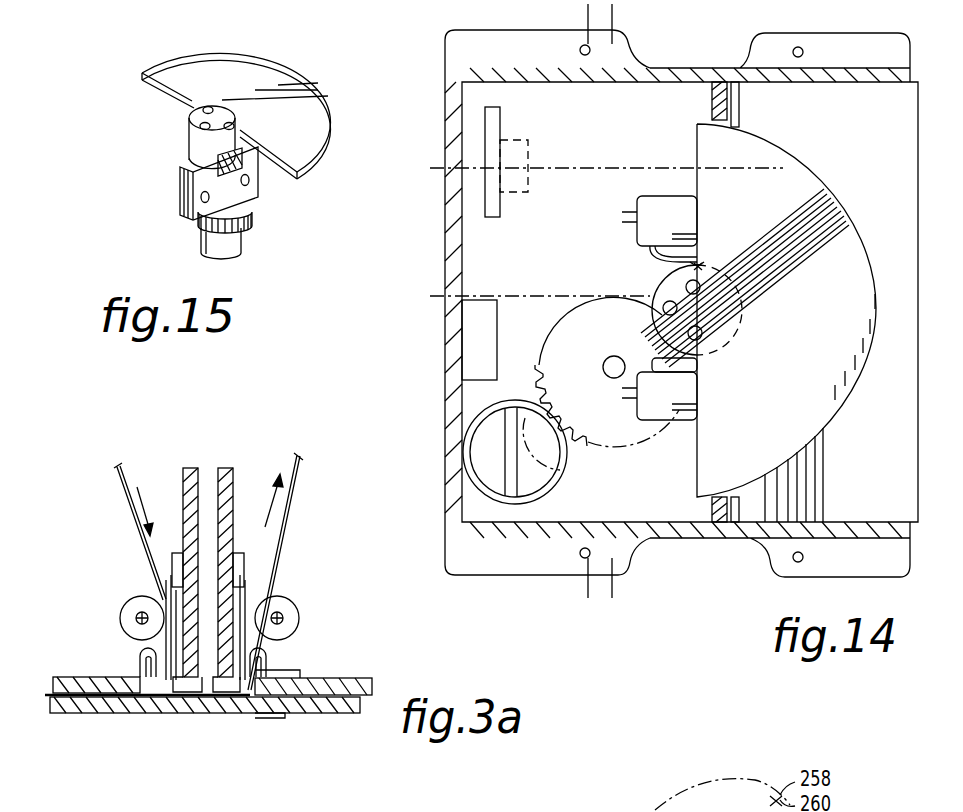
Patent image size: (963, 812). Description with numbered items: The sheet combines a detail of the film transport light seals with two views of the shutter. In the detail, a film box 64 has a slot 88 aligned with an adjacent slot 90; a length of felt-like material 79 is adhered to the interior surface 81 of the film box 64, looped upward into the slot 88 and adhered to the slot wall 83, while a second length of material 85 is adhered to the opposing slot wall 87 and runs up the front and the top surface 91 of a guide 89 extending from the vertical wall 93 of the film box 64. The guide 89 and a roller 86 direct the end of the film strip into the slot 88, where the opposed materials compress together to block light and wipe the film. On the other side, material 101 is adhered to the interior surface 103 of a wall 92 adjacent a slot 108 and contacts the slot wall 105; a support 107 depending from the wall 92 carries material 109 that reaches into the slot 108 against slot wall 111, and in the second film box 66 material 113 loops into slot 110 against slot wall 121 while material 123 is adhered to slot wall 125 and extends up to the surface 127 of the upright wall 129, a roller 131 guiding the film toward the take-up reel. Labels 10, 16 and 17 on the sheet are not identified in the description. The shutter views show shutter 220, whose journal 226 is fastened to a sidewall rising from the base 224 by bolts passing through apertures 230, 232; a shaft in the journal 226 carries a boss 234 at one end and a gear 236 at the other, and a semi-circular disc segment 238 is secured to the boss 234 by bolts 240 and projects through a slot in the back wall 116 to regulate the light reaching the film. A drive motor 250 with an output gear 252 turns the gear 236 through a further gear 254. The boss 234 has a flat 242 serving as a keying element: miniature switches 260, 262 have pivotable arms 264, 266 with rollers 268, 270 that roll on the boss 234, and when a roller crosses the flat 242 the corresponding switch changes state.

In FIG. 3A, the needle 10 is at (125, 490).
In FIG. 14, the section line 16 is at (588, 14).
In FIG. 14, the section line 17 is at (612, 14).
In FIG. 3A, the film box 64 is at (75, 700).
In FIG. 3A, the film box 66 is at (375, 688).
In FIG. 3A, the length of material 79 is at (140, 665).
In FIG. 3A, the interior surface 81 is at (58, 678).
In FIG. 3A, the slot wall 83 is at (148, 706).
In FIG. 3A, the second length of material 85 is at (168, 592).
In FIG. 3A, the roller 86 is at (120, 618).
In FIG. 3A, the opposing slot wall 87 is at (170, 610).
In FIG. 3A, the slot 88 is at (128, 708).
In FIG. 3A, the guide 89 is at (170, 600).
In FIG. 3A, the slot 90 is at (165, 715).
In FIG. 3A, the top surface 91 is at (178, 553).
In FIG. 3A, the wall 92 is at (204, 716).
In FIG. 3A, the vertical wall 93 is at (183, 492).
In FIG. 3A, the length of material 101 is at (282, 720).
In FIG. 3A, the interior surface 103 is at (352, 716).
In FIG. 3A, the slot wall 105 is at (280, 675).
In FIG. 3A, the support 107 is at (246, 735).
In FIG. 3A, the slot 108 is at (288, 680).
In FIG. 3A, the length of material 109 is at (242, 745).
In FIG. 3A, the slot 110 is at (265, 668).
In FIG. 3A, the slot wall 111 is at (250, 716).
In FIG. 3A, the length of material 113 is at (272, 650).
In FIG. 14, the back wall 116 is at (712, 92).
In FIG. 3A, the back wall 116 is at (358, 688).
In FIG. 3A, the slot wall 121 is at (285, 610).
In FIG. 3A, the further length of material 123 is at (255, 600).
In FIG. 3A, the slot wall 125 is at (238, 600).
In FIG. 3A, the surface 127 is at (233, 545).
In FIG. 3A, the upright wall 129 is at (235, 498).
In FIG. 3A, the roller 131 is at (323, 571).
In FIG. 15, the shutter 220 is at (314, 271).
In FIG. 14, the base 224 is at (668, 506).
In FIG. 15, the journal 226 is at (190, 208).
In FIG. 15, the aperture 230 is at (244, 204).
In FIG. 15, the aperture 232 is at (250, 181).
In FIG. 15, the boss 234 is at (187, 150).
In FIG. 14, the boss 234 is at (740, 320).
In FIG. 15, the gear 236 is at (200, 243).
In FIG. 15, the disc segment 238 is at (294, 82).
In FIG. 14, the disc segment 238 is at (783, 446).
In FIG. 15, the bolts 240 is at (229, 122).
In FIG. 15, the flat 242 is at (216, 168).
In FIG. 14, the flat 242 is at (713, 266).
In FIG. 14, the drive motor 250 is at (487, 412).
In FIG. 14, the output gear 252 is at (582, 450).
In FIG. 14, the further gear 254 is at (622, 434).
In FIG. 14, the miniature switch 260 is at (641, 204).
In FIG. 14, the miniature switch 262 is at (700, 400).
In FIG. 14, the pivotable arm 264 is at (656, 256).
In FIG. 14, the pivotable arm 266 is at (655, 352).
In FIG. 14, the roller 268 is at (704, 258).
In FIG. 14, the roller 270 is at (712, 358).